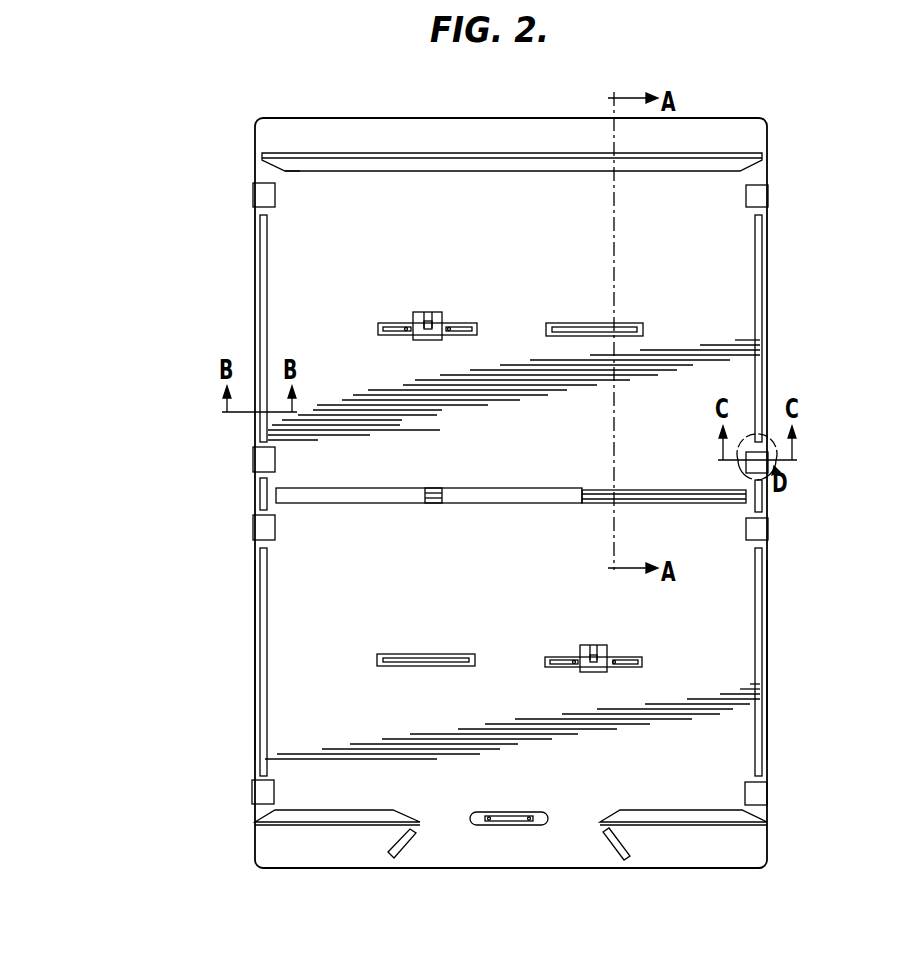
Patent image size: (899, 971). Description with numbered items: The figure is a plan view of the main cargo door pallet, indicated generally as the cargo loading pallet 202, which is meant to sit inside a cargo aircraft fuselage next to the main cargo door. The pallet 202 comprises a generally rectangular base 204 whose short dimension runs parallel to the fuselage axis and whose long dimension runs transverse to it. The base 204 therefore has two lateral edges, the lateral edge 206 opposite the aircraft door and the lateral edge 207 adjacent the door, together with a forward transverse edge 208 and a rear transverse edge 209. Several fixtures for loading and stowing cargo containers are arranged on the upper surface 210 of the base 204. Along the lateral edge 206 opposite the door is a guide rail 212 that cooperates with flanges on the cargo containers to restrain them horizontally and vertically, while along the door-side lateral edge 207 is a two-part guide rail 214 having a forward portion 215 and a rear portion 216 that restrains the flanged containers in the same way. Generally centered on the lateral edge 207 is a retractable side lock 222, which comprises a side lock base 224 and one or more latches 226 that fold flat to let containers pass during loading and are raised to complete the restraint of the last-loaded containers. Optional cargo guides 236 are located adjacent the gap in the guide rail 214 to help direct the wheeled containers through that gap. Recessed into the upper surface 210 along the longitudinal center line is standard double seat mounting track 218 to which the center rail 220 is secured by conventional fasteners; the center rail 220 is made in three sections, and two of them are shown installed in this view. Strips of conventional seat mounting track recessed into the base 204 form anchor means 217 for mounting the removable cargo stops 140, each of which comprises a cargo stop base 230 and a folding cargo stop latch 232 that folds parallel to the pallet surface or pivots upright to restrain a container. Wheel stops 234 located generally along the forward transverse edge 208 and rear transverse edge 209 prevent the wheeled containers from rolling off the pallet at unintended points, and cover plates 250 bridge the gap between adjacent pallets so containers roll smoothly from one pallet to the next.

The cargo loading pallet 202 is at (244, 136).
The base 204 is at (378, 132).
The lateral edge opposite the main cargo door 206 is at (470, 117).
The lateral edge adjacent the main cargo door 207 is at (698, 869).
The forward transverse edge 208 is at (254, 692).
The rear transverse edge 209 is at (768, 602).
The upper surface 210 is at (385, 236).
The guide rail 212 is at (296, 152).
The two-part guide rail 214 is at (483, 829).
The forward portion 215 is at (296, 827).
The rear portion 216 is at (698, 827).
The anchor means 217 is at (466, 323).
The double seat mounting track 218 is at (673, 489).
The center rail 220 is at (345, 487).
The retractable side lock 222 is at (499, 837).
The side lock base 224 is at (500, 817).
The latches 226 is at (490, 815).
The cargo stop base 230 is at (418, 312).
The folding cargo stop latch 232 is at (436, 321).
The wheel stops 234 is at (259, 238).
The cargo guides 236 is at (390, 848).
The cover plates 250 is at (253, 195).
The removable cargo stops 140 is at (521, 478).